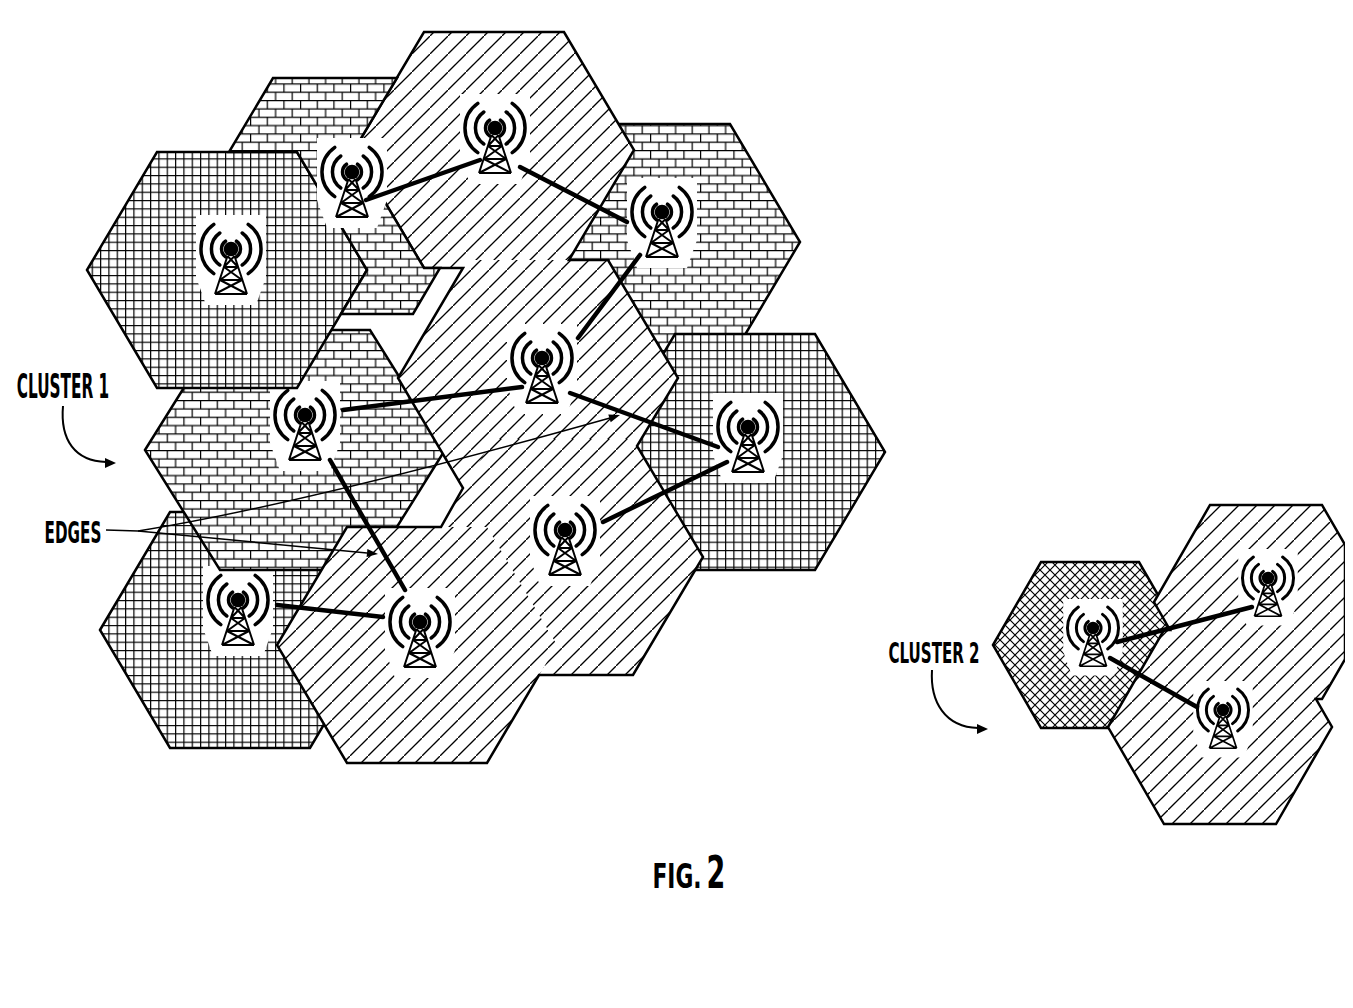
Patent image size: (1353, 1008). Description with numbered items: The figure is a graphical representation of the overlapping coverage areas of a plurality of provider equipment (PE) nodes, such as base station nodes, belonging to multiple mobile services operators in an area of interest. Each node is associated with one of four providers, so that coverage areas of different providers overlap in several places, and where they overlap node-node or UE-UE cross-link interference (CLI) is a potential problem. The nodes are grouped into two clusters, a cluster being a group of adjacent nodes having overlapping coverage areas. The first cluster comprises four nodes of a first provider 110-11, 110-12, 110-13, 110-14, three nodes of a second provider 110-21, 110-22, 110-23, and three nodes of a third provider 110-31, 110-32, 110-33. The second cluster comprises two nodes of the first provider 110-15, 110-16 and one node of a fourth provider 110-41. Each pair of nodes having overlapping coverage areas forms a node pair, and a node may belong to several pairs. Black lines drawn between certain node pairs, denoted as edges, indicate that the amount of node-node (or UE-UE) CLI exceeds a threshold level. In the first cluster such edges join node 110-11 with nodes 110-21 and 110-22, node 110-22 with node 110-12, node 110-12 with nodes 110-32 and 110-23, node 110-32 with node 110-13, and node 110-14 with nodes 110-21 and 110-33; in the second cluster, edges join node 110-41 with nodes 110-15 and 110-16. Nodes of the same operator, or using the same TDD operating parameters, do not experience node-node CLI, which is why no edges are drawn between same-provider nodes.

The first provider PE node 110-11 is at (464, 237).
The first provider PE node 110-12 is at (510, 310).
The first provider PE node 110-13 is at (534, 640).
The first provider PE node 110-14 is at (388, 730).
The first provider PE node 110-15 is at (1238, 670).
The first provider PE node 110-16 is at (1192, 817).
The second provider PE node 110-21 is at (281, 113).
The second provider PE node 110-22 is at (674, 312).
The second provider PE node 110-23 is at (181, 455).
The third provider PE node 110-31 is at (199, 357).
The third provider PE node 110-32 is at (717, 535).
The third provider PE node 110-33 is at (172, 709).
The fourth provider PE node 110-41 is at (1044, 708).